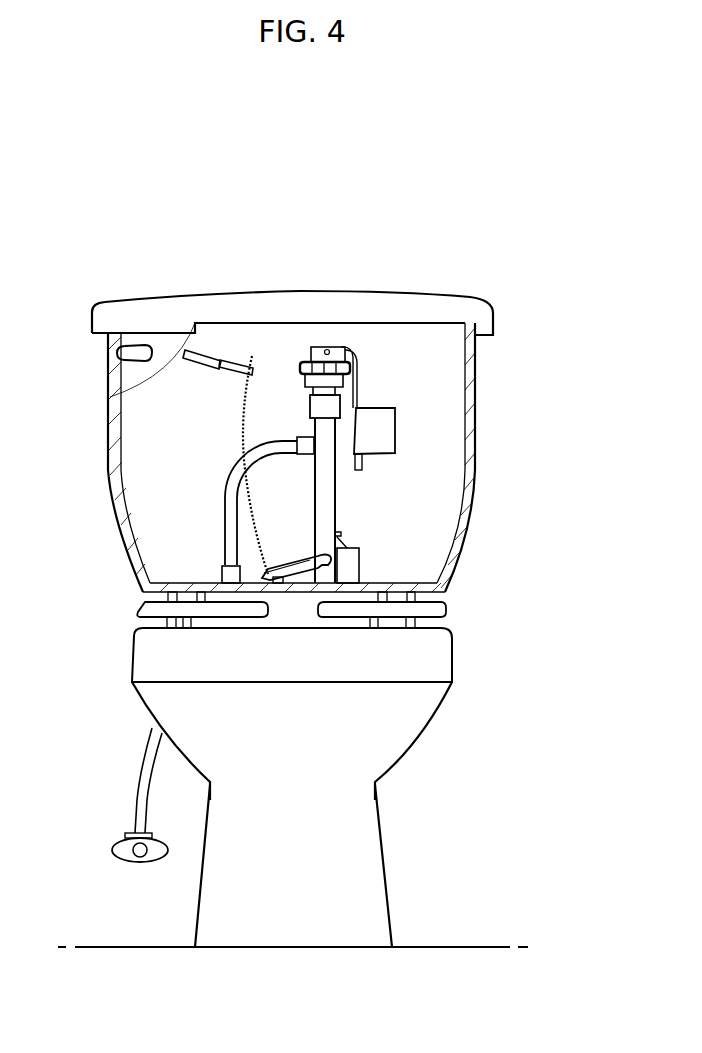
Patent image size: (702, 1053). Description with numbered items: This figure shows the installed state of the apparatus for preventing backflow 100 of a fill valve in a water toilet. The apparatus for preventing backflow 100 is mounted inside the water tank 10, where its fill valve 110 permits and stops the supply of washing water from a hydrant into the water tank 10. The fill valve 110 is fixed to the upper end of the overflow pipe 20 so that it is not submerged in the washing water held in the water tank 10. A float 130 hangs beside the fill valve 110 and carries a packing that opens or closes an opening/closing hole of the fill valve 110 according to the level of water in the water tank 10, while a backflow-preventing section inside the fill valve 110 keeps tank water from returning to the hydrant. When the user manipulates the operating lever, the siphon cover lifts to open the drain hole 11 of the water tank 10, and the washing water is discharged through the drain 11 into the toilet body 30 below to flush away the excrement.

The water tank 10 is at (478, 365).
The drain hole 11 is at (283, 578).
The overflow pipe 20 is at (325, 488).
The toilet body 30 is at (405, 733).
The apparatus for preventing backflow 100 is at (419, 392).
The fill valve 110 is at (303, 362).
The float 130 is at (383, 432).